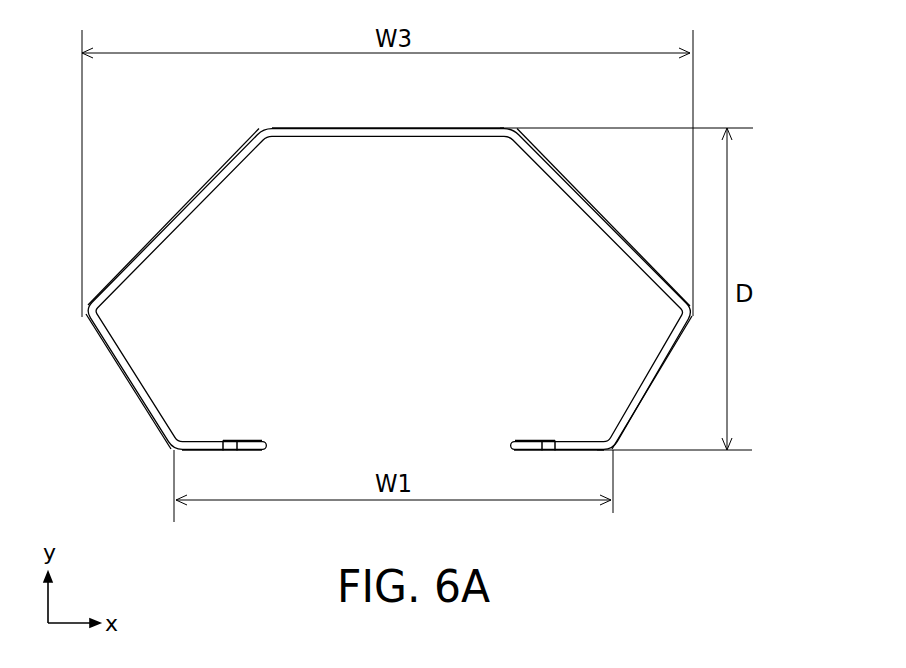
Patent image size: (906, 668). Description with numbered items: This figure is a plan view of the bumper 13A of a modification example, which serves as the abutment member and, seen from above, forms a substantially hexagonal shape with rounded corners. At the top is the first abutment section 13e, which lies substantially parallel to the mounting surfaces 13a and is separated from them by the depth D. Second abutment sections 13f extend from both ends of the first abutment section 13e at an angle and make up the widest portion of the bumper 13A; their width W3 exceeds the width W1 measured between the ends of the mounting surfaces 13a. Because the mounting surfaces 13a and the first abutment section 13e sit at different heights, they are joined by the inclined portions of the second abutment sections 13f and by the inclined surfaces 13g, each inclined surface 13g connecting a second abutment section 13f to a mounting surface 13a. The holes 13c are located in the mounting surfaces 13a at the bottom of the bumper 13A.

The bumper 13A is at (739, 70).
The first abutment section 13e is at (350, 136).
The second abutment sections 13f is at (198, 198).
The inclined surfaces 13g is at (127, 374).
The holes 13c is at (227, 452).
The mounting surfaces 13a is at (257, 440).